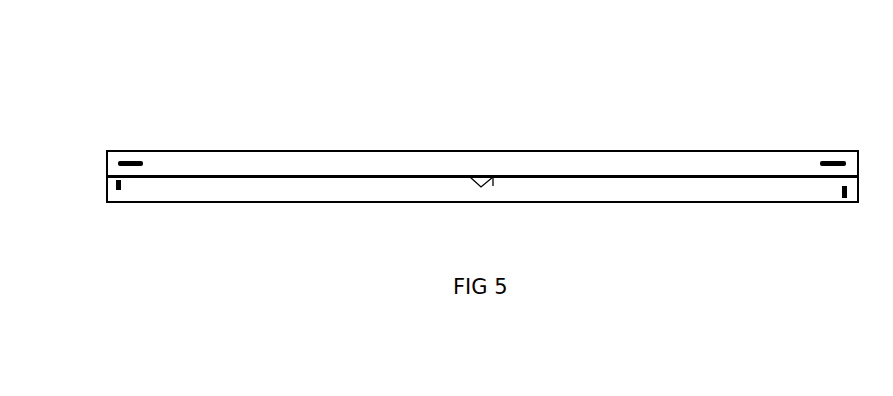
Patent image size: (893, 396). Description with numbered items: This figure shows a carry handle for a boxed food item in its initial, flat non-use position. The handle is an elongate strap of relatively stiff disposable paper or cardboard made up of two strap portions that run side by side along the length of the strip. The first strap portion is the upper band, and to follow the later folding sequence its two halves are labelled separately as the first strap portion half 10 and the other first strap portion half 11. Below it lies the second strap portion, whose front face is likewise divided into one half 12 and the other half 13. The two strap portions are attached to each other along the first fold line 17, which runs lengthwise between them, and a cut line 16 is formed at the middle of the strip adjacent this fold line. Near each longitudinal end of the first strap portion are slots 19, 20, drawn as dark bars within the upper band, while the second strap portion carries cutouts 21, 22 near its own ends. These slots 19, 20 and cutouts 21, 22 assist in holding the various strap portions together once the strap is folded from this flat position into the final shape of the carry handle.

The first strap portion half 10 is at (610, 144).
The first strap portion half 11 is at (237, 149).
The second strap portion front face half 12 is at (703, 205).
The second strap portion front face half 13 is at (258, 205).
The cut line 16 is at (480, 184).
The first fold line 17 is at (495, 181).
The slot 19 is at (825, 151).
The slot 20 is at (130, 151).
The cutout 21 is at (845, 201).
The cutout 22 is at (122, 201).